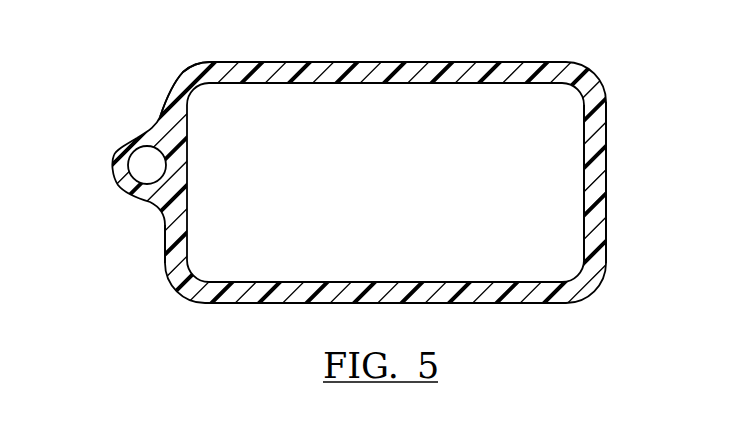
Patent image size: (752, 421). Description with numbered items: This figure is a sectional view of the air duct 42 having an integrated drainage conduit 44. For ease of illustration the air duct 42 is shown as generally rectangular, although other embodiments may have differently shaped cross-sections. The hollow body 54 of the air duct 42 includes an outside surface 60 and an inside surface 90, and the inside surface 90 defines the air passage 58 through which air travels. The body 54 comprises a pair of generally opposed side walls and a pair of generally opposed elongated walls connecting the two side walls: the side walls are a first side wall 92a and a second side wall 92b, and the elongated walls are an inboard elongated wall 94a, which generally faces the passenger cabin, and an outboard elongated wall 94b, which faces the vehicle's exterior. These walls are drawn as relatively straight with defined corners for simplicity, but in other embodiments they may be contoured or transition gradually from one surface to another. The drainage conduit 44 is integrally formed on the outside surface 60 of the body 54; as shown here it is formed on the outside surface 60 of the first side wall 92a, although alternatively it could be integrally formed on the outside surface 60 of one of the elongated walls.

The air duct 42 is at (530, 57).
The drainage conduit 44 is at (113, 168).
The hollow body 54 is at (606, 125).
The air passage 58 is at (378, 197).
The outside surface 60 is at (165, 248).
The inside surface 90 is at (482, 282).
The first side wall 92a is at (163, 98).
The second side wall 92b is at (606, 234).
The inboard elongated wall 94a is at (537, 303).
The outboard elongated wall 94b is at (228, 62).